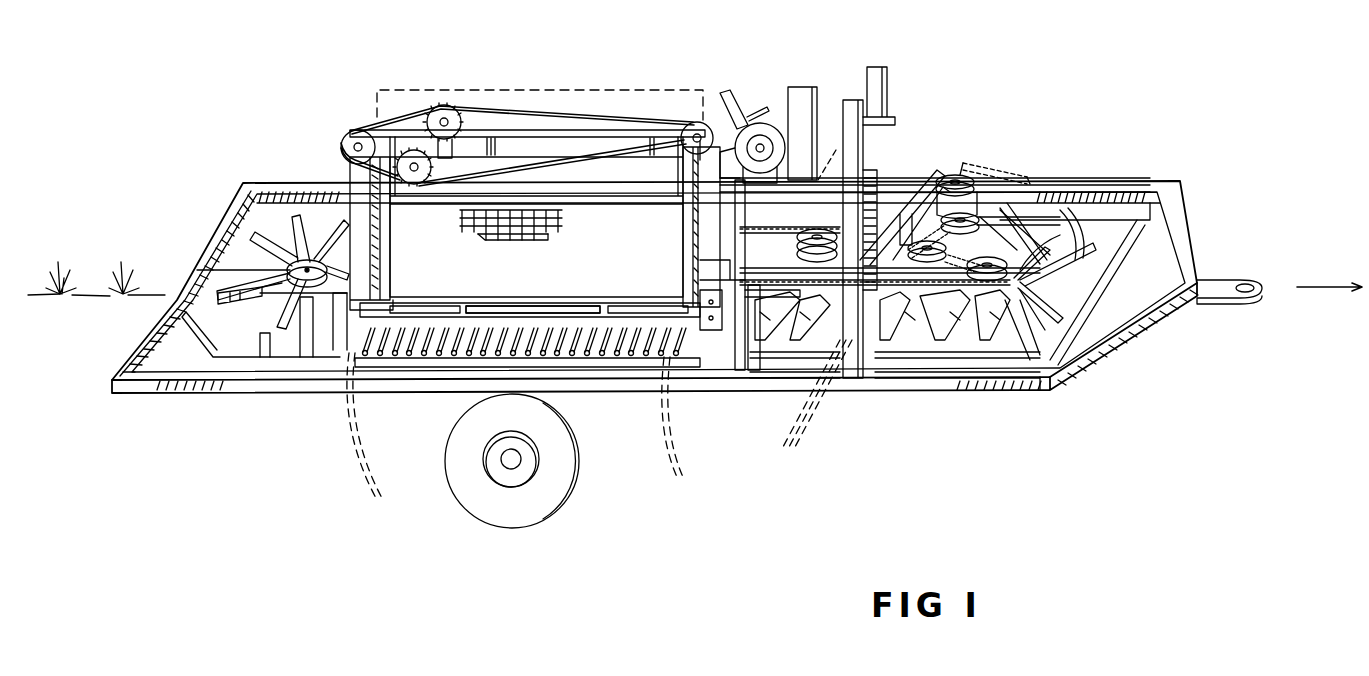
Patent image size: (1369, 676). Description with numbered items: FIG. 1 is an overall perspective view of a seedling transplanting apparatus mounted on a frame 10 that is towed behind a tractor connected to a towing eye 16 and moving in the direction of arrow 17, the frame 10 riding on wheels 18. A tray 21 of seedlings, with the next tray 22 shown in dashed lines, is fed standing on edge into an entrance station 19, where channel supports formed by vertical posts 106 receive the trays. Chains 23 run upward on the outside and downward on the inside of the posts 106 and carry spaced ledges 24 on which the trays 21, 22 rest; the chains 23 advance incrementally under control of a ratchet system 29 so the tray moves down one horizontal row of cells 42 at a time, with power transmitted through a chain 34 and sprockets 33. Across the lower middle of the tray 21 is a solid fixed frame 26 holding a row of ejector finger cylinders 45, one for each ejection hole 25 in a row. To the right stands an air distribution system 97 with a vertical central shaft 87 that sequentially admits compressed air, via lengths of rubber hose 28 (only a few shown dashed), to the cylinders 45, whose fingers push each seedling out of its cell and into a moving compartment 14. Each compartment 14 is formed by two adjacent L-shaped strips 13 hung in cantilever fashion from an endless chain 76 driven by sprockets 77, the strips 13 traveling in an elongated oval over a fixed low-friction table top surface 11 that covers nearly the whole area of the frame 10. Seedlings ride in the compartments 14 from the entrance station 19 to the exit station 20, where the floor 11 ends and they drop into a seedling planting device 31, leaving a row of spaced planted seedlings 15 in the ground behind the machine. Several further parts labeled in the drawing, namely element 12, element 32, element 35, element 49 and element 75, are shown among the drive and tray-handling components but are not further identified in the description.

The frame 10 is at (1176, 180).
The table top surface 11 is at (210, 348).
The upright post 12 is at (391, 280).
The L-shaped strips 13 is at (236, 300).
The moving compartments 14 is at (290, 360).
The planted seedlings 15 is at (118, 282).
The towing eye 16 is at (1246, 278).
The arrow 17 is at (1327, 284).
The wheels 18 is at (557, 464).
The entrance station 19 is at (708, 66).
The exit station 20 is at (1032, 410).
The tray 21 is at (527, 248).
The next tray 22 is at (426, 90).
The chains 23 is at (740, 372).
The spaced ledges 24 is at (752, 372).
The ejection holes 25 is at (502, 240).
The fixed frame 26 is at (512, 327).
The rubber hose 28 is at (360, 468).
The ratchet system 29 is at (800, 87).
The seedling planting device 31 is at (1075, 360).
The chain 32 is at (1003, 170).
The sprockets 33 is at (356, 130).
The chain 34 is at (508, 104).
The gear pulley 35 is at (443, 105).
The cells 42 is at (548, 234).
The ejector finger cylinders 45 is at (452, 356).
The motor 49 is at (742, 108).
The sprocket 75 is at (948, 168).
The endless chain 76 is at (300, 268).
The sprockets 77 is at (255, 240).
The vertical central shaft 87 is at (856, 100).
The air distribution system 97 is at (910, 78).
The vertical posts 106 is at (392, 243).